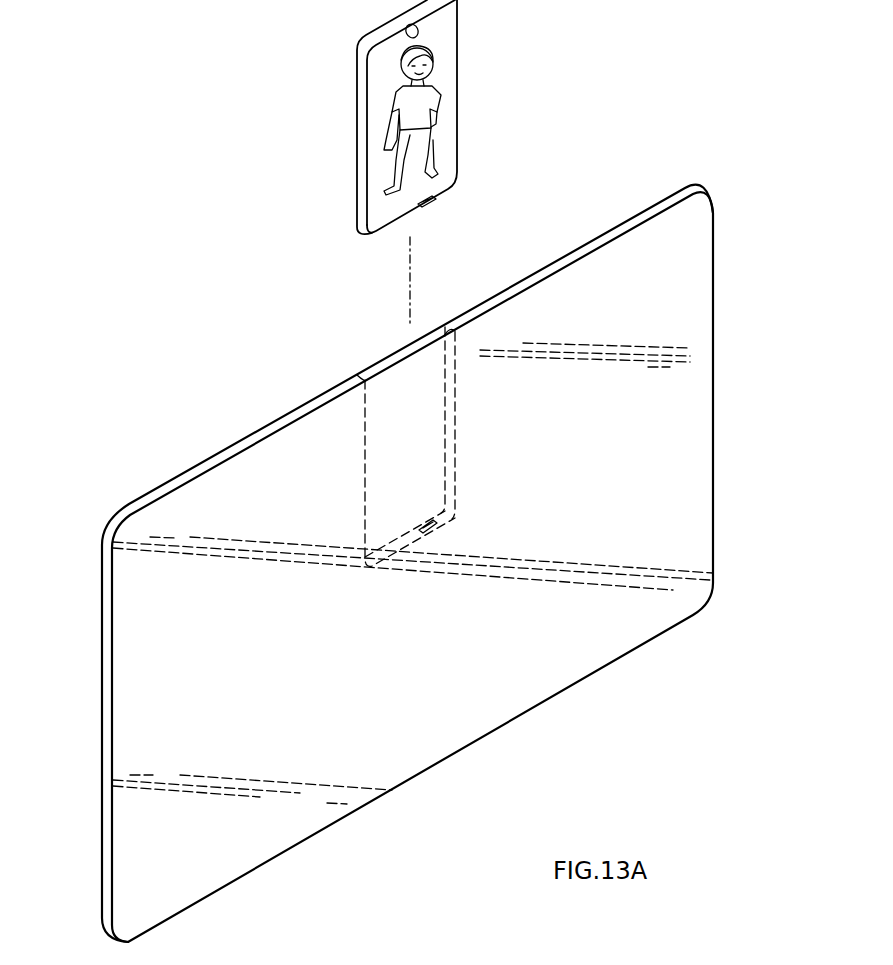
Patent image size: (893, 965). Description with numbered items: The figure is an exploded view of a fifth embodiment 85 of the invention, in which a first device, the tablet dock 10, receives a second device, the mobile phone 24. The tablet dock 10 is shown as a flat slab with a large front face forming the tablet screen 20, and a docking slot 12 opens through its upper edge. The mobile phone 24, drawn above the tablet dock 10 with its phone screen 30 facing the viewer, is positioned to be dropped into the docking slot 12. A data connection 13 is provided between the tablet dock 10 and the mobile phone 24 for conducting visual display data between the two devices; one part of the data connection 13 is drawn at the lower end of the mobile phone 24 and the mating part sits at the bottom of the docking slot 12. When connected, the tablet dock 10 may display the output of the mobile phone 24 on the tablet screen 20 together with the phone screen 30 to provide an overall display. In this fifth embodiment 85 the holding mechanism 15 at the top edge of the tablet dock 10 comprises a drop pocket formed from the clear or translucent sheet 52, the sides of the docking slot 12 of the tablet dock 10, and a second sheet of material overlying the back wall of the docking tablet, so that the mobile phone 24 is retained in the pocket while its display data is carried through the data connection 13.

The fifth embodiment 85 is at (203, 357).
The tablet dock 10 is at (661, 196).
The holding mechanism 15 is at (370, 360).
The tablet screen 20 is at (672, 300).
The clear or translucent sheet 52 is at (606, 491).
The docking slot 12 is at (443, 373).
The data connection 13 is at (430, 206).
The mobile phone 24 is at (352, 146).
The phone screen 30 is at (440, 83).